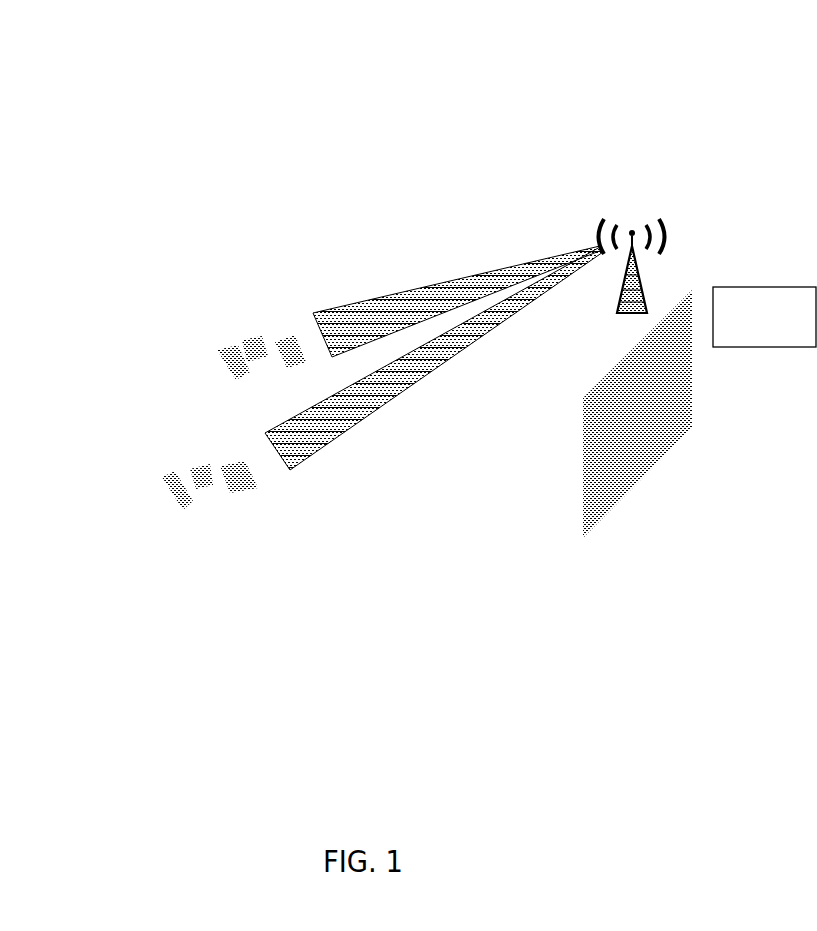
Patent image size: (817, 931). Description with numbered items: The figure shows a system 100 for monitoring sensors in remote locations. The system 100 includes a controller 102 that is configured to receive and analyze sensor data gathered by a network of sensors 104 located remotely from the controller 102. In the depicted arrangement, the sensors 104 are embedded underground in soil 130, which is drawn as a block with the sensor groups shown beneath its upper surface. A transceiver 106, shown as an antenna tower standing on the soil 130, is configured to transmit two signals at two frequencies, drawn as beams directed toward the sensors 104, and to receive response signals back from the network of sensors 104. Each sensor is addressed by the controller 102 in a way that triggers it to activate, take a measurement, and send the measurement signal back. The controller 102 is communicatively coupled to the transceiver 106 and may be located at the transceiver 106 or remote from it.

The system 100 is at (692, 120).
The controller 102 is at (778, 337).
The network of sensors 104 is at (207, 455).
The transceiver 106 is at (641, 282).
The soil 130 is at (555, 528).